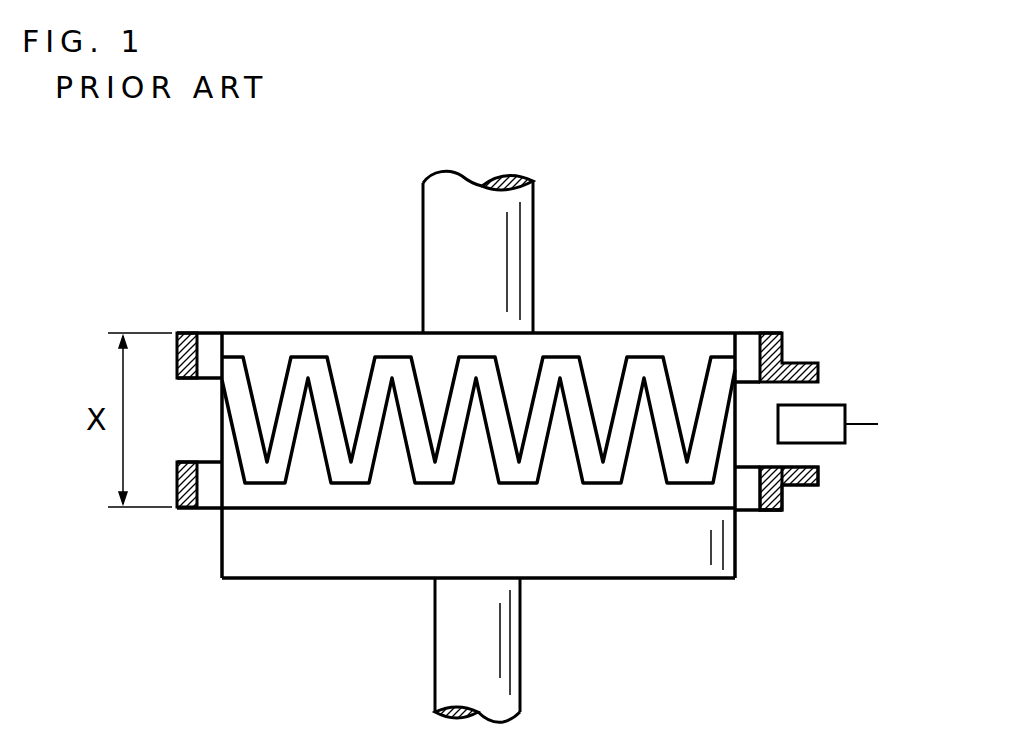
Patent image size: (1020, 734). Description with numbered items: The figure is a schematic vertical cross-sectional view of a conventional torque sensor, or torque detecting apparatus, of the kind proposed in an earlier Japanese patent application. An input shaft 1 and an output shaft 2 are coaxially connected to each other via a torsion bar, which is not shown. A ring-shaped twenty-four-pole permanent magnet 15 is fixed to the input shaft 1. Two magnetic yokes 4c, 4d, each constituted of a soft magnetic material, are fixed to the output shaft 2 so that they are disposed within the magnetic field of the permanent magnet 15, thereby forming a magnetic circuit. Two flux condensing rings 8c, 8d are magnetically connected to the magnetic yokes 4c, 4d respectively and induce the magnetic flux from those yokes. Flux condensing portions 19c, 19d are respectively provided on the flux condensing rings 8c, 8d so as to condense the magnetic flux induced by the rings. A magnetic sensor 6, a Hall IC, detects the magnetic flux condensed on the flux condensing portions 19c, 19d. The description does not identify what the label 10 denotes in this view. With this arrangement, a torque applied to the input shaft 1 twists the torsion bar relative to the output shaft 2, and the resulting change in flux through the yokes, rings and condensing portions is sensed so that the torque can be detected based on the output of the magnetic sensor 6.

The input shaft 1 is at (513, 213).
The output shaft 2 is at (508, 684).
The magnetic yoke 4c is at (363, 333).
The magnetic yoke 4d is at (390, 503).
The magnetic sensor 6 is at (818, 418).
The flux condensing ring 8c is at (188, 330).
The flux condensing ring 8d is at (187, 510).
The grooves of wave spring 10 is at (267, 410).
The permanent magnet 15 is at (578, 393).
The flux condensing portion 19c is at (798, 389).
The flux condensing portion 19d is at (800, 487).